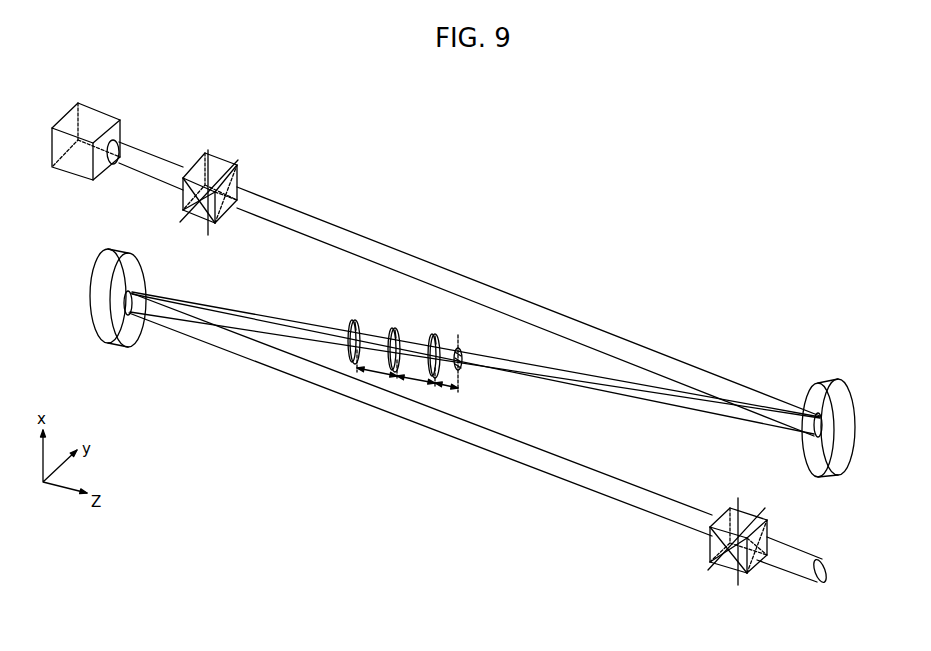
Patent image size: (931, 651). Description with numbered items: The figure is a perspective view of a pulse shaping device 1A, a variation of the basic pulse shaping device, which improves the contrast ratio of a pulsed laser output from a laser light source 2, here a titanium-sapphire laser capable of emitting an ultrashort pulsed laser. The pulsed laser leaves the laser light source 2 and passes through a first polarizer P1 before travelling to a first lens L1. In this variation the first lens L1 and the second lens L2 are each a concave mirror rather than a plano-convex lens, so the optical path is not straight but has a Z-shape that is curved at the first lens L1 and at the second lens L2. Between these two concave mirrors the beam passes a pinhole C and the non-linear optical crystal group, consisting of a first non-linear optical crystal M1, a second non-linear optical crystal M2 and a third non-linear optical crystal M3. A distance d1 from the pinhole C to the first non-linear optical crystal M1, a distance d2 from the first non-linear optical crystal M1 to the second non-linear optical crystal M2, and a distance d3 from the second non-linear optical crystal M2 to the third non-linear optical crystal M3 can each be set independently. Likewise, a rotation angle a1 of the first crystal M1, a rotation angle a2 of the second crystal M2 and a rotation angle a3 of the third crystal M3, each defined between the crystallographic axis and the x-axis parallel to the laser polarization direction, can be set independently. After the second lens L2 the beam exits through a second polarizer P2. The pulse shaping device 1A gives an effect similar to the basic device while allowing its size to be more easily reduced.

The pulse shaping device 1A is at (710, 133).
The laser light source 2 is at (90, 117).
The first polarizer P1 is at (225, 155).
The second polarizer P2 is at (752, 508).
The first lens L1 is at (847, 403).
The second lens L2 is at (97, 342).
The first non-linear optical crystal M1 is at (437, 333).
The second non-linear optical crystal M2 is at (397, 328).
The third non-linear optical crystal M3 is at (357, 322).
The rotation angle of the first non-linear optical crystal a1 is at (437, 332).
The rotation angle of the second non-linear optical crystal a2 is at (397, 326).
The rotation angle of the third non-linear optical crystal a3 is at (357, 318).
The pinhole C is at (462, 352).
The distance from the pinhole to the first non-linear optical crystal d1 is at (443, 388).
The distance from the first non-linear optical crystal to the second non-linear opti d2 is at (415, 383).
The distance from the second non-linear optical crystal to the third non-linear opti d3 is at (374, 377).